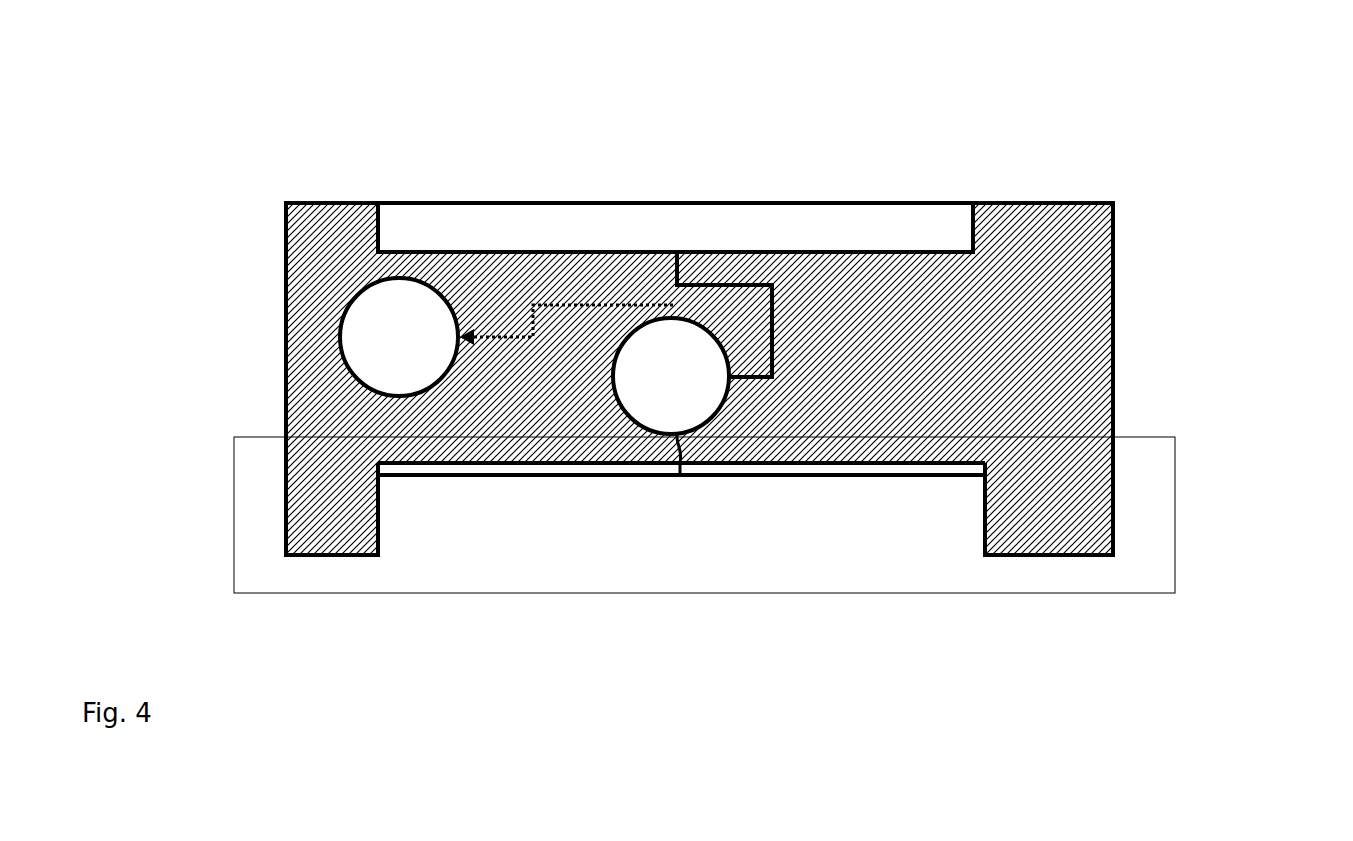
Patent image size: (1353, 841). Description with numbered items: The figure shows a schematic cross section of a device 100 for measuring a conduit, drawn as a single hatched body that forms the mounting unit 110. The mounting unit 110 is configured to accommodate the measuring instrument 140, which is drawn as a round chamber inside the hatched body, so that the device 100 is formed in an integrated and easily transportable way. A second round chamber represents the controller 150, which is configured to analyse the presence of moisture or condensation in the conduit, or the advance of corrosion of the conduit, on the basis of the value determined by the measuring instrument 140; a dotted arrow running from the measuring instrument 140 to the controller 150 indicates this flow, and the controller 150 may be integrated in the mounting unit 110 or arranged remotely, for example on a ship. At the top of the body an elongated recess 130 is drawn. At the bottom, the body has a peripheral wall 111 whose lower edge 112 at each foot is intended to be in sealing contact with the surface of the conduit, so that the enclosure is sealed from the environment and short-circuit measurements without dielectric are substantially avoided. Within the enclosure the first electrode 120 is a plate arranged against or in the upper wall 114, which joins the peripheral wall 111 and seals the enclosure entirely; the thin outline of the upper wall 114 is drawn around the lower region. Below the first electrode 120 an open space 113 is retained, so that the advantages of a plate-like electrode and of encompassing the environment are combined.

The device 100 is at (545, 33).
The mounting unit 110 is at (297, 332).
The peripheral wall 111 is at (287, 530).
The lower edge 112 is at (1065, 570).
The open space 113 is at (692, 555).
The upper wall 114 is at (1175, 515).
The first electrode 120 is at (683, 477).
The top slot 130 is at (970, 202).
The measuring instrument 140 is at (671, 376).
The controller 150 is at (399, 337).